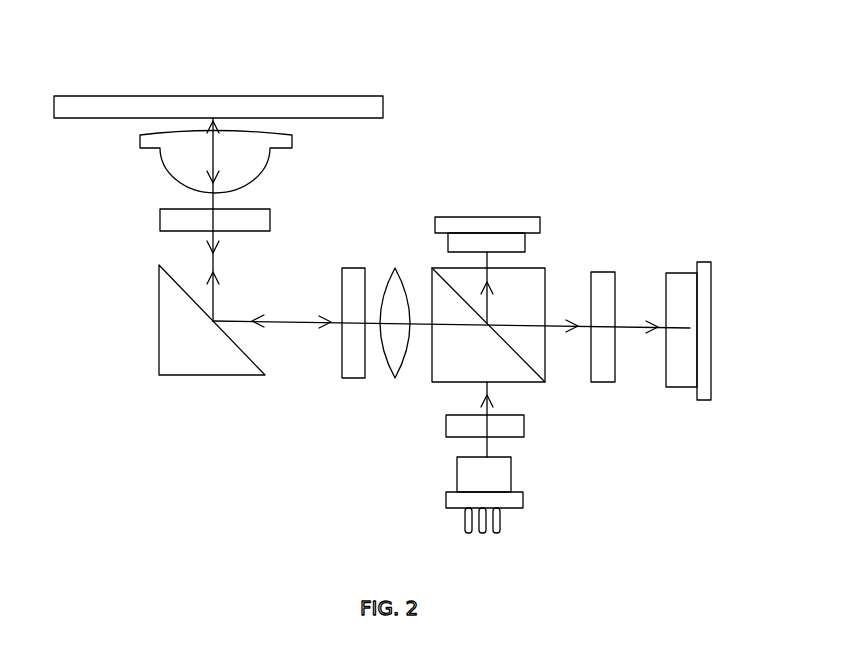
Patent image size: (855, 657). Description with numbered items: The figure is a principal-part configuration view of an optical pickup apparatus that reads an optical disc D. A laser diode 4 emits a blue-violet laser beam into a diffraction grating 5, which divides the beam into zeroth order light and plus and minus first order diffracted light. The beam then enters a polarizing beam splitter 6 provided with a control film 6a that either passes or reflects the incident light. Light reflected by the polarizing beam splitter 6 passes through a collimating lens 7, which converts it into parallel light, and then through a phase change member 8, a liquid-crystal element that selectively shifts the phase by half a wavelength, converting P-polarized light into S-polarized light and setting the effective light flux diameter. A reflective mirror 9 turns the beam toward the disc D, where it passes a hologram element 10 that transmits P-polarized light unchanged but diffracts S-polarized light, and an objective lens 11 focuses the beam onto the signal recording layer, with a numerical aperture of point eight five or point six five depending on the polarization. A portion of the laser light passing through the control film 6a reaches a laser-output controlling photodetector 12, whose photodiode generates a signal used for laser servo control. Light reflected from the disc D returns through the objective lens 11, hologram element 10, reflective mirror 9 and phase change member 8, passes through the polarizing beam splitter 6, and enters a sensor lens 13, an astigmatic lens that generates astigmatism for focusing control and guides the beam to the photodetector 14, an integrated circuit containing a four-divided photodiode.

The optical disc D is at (219, 69).
The laser diode 4 is at (510, 481).
The diffraction grating 5 is at (518, 423).
The polarizing beam splitter 6 is at (437, 382).
The control film 6a is at (513, 345).
The collimating lens 7 is at (398, 268).
The phase change member 8 is at (353, 378).
The reflective mirror 9 is at (184, 372).
The hologram element 10 is at (170, 221).
The objective lens 11 is at (183, 168).
The laser-output controlling photodetector 12 is at (511, 242).
The sensor lens 13 is at (604, 370).
The photodetector 14 is at (683, 272).